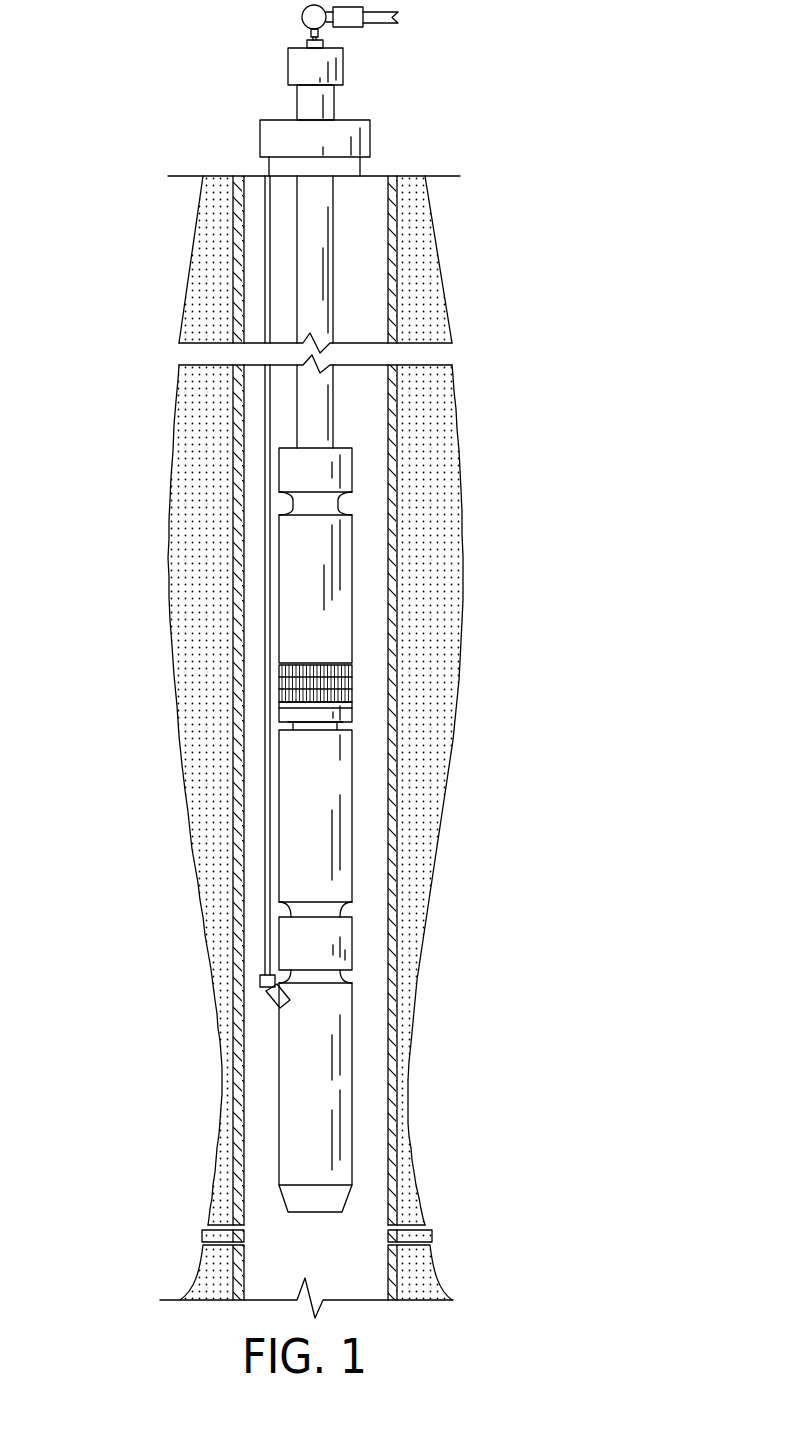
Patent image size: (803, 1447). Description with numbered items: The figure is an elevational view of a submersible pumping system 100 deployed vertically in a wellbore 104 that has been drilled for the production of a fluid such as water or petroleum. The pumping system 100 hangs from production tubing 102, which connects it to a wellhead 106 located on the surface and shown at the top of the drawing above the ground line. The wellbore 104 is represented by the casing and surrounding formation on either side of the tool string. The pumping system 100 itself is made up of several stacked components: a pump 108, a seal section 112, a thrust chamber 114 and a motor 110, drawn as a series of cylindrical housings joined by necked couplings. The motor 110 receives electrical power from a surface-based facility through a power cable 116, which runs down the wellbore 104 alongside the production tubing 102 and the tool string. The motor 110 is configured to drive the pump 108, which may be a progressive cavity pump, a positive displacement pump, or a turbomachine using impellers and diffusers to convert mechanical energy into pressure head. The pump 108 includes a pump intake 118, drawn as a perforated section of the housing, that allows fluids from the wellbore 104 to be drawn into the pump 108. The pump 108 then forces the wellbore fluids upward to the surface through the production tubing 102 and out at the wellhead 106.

The pumping system 100 is at (285, 830).
The production tubing 102 is at (333, 221).
The wellbore 104 is at (400, 297).
The wellhead 106 is at (292, 70).
The pump 108 is at (352, 645).
The motor 110 is at (352, 1046).
The seal section 112 is at (352, 766).
The thrust chamber 114 is at (307, 958).
The power cable 116 is at (265, 773).
The pump intake 118 is at (279, 673).